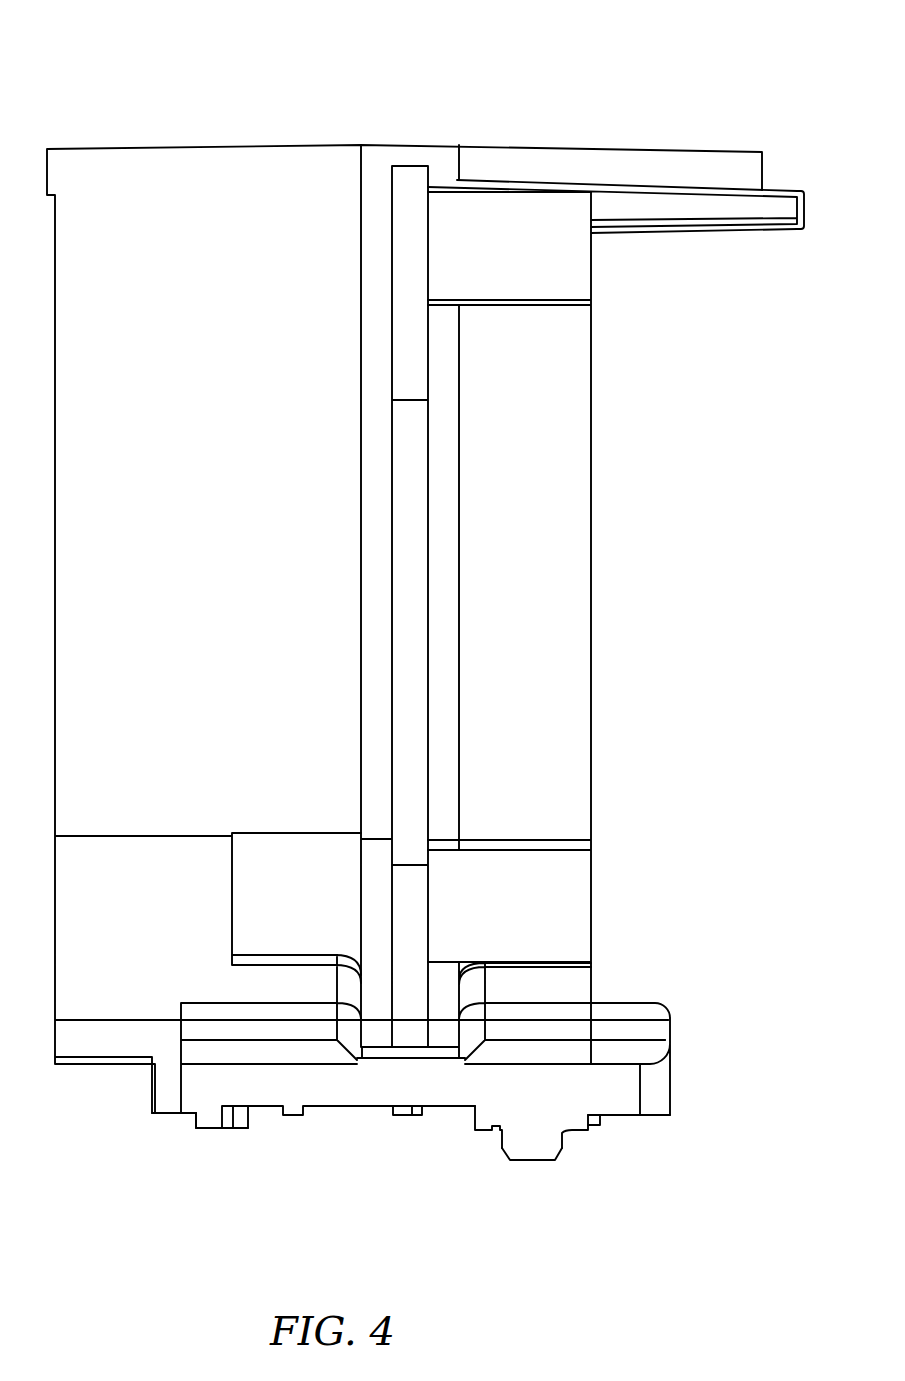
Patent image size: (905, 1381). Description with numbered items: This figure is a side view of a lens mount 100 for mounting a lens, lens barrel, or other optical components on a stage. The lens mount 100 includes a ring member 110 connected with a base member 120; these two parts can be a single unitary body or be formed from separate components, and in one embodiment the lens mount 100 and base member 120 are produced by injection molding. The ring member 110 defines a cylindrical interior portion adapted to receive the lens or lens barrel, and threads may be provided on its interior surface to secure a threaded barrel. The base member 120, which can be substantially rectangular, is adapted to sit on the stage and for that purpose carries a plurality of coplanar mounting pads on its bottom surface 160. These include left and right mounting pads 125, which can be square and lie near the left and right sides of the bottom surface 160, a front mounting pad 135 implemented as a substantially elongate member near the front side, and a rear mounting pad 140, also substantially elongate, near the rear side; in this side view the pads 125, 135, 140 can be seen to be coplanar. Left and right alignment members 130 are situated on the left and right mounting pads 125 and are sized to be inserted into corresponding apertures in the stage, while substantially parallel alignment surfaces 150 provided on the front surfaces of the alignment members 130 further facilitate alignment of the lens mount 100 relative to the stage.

The lens mount 100 is at (349, 72).
The ring member 110 is at (550, 352).
The base member 120 is at (628, 1092).
The left and right mounting pads 125 is at (482, 1135).
The alignment members 130 is at (533, 1162).
The front mounting pad 135 is at (603, 1127).
The rear mounting pad 140 is at (209, 1128).
The alignment surfaces 150 is at (565, 1140).
The bottom surface 160 is at (354, 1142).